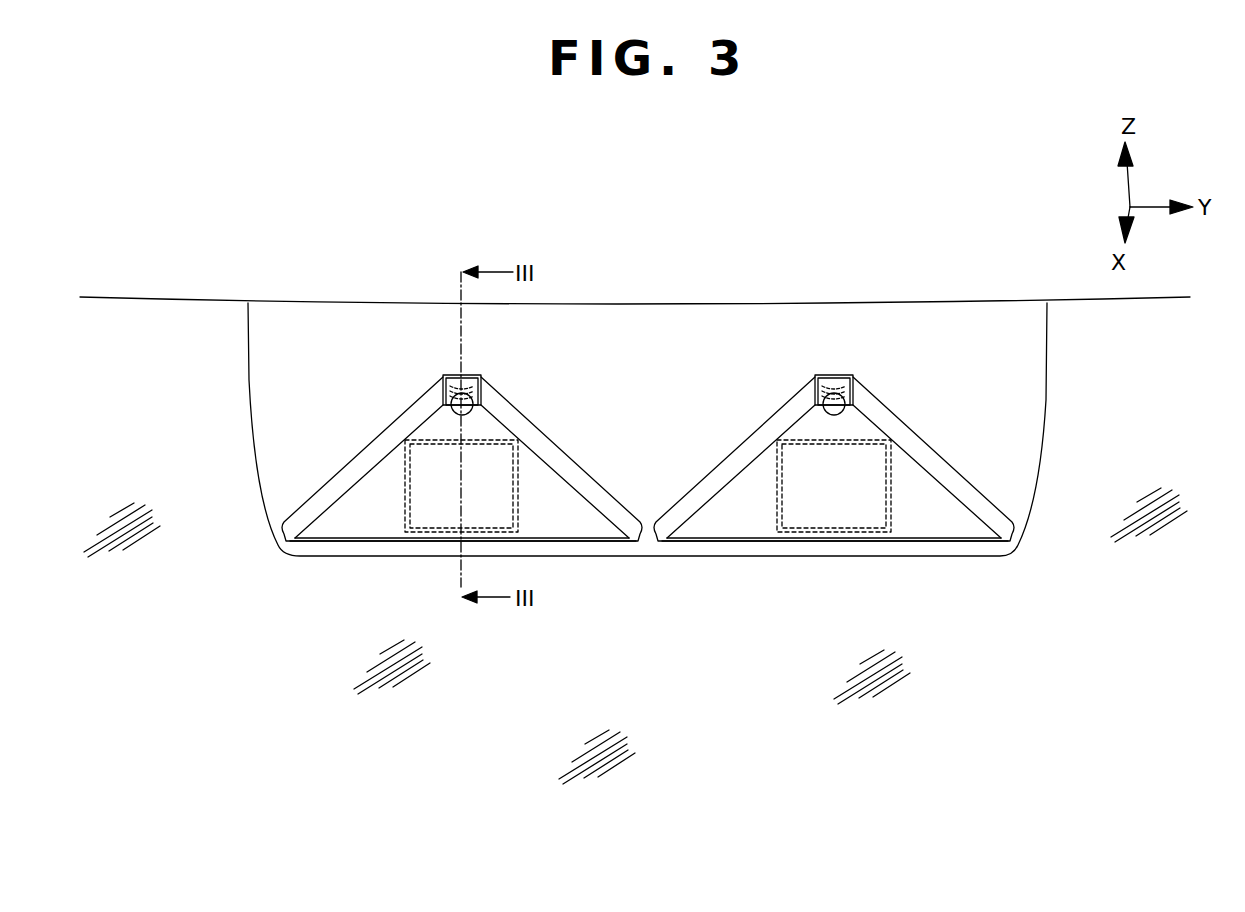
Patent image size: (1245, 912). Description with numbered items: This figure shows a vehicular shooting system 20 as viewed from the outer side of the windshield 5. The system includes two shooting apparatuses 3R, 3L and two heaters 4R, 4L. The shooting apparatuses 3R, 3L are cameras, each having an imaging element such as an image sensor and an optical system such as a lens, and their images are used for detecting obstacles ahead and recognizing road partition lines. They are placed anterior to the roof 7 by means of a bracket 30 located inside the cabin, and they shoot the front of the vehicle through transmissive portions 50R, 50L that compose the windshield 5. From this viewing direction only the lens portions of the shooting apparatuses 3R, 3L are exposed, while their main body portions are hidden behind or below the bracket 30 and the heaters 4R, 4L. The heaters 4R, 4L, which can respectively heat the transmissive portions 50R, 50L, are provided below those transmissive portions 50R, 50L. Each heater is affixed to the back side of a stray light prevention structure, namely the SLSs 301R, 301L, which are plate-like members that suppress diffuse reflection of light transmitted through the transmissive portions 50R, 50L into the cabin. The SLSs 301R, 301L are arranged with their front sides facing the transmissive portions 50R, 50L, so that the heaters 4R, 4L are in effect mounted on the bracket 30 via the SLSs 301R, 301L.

The shooting apparatus 3R is at (450, 376).
The shooting apparatus 3L is at (822, 376).
The heater 4R is at (405, 518).
The heater 4L is at (777, 517).
The SLS (stray light prevention structure) 301R is at (450, 539).
The SLS (stray light prevention structure) 301L is at (830, 538).
The transmissive portion 50R is at (317, 527).
The transmissive portion 50L is at (942, 528).
The bracket 30 is at (247, 360).
The vehicular shooting system 20 is at (636, 604).
The roof 7 is at (653, 240).
The windshield 5 is at (134, 431).